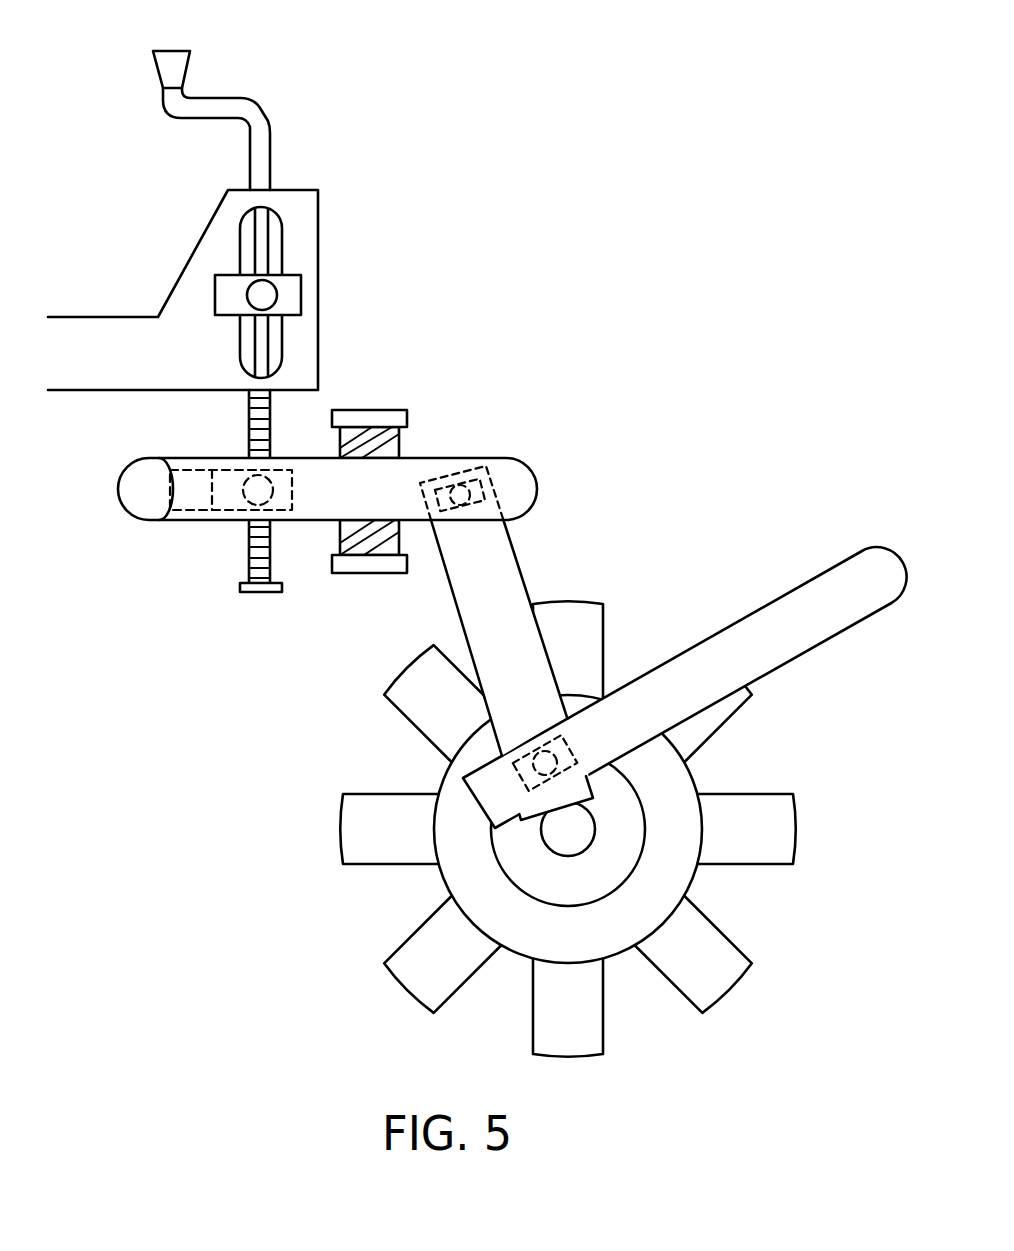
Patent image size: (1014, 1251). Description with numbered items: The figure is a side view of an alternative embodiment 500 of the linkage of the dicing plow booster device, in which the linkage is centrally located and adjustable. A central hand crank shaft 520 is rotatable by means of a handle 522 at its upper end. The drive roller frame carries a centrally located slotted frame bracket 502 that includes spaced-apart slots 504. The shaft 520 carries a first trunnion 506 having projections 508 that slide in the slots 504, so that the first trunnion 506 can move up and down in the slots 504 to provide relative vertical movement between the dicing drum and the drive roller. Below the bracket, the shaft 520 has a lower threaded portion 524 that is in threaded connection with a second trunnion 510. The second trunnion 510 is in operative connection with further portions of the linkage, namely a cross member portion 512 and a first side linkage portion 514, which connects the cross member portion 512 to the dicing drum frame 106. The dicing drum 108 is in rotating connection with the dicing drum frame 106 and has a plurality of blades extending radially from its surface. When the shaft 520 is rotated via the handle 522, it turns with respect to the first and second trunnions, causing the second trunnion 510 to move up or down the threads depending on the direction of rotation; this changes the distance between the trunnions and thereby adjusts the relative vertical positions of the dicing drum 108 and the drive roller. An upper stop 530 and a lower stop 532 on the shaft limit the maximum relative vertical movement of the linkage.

The alternative embodiment of the linkage 500 is at (515, 168).
The slotted frame bracket 502 is at (307, 191).
The slots 504 is at (265, 230).
The first trunnion 506 is at (288, 295).
The projections 508 is at (252, 293).
The second trunnion 510 is at (232, 493).
The cross member portion 512 is at (131, 489).
The first side linkage portion 514 is at (502, 538).
The central hand crank shaft 520 is at (260, 107).
The handle 522 is at (160, 50).
The lower threaded portion 524 is at (253, 423).
The upper stop 530 is at (371, 412).
The lower stop 532 is at (388, 563).
The dicing drum frame 106 is at (866, 560).
The dicing drum 108 is at (693, 883).